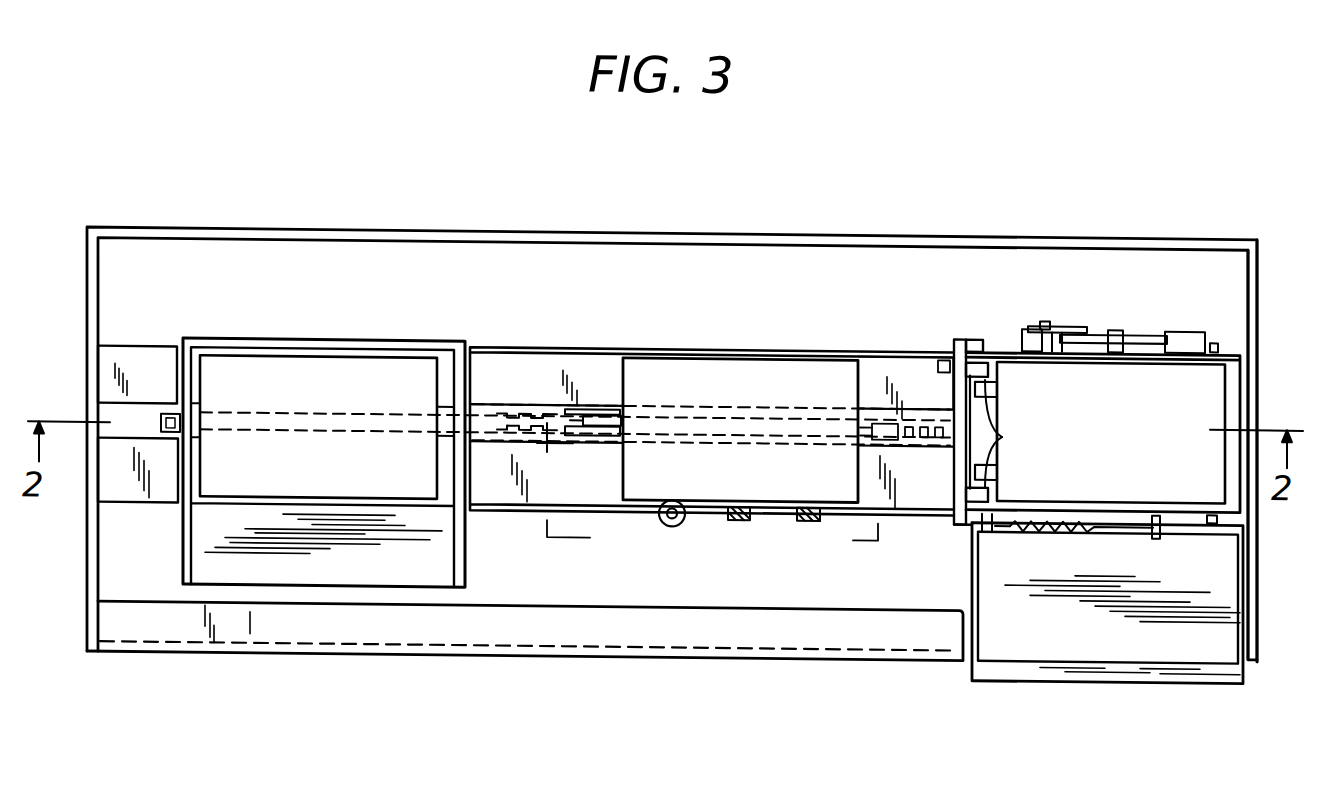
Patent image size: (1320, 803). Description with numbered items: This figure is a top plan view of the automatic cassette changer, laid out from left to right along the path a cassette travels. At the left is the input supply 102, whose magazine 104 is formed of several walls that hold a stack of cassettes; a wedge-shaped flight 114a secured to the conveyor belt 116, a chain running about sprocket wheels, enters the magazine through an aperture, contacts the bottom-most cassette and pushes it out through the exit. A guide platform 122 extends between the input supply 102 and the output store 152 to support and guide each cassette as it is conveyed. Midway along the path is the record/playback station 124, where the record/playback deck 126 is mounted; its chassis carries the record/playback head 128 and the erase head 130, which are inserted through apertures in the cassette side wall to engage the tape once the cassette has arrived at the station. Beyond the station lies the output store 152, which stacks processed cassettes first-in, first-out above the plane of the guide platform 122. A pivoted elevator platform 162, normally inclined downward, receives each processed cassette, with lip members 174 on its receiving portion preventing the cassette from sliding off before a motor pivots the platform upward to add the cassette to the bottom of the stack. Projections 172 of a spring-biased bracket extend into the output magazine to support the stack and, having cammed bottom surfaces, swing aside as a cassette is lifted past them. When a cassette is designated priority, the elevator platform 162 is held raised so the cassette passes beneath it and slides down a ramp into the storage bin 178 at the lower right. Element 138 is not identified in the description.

The input supply 102 is at (273, 318).
The magazine 104 is at (407, 338).
The flight 114a is at (605, 409).
The conveyor belt 116 is at (533, 412).
The guide platform 122 is at (903, 359).
The record/playback station 124 is at (802, 345).
The record/playback deck 126 is at (698, 363).
The record/playback head 128 is at (742, 514).
The erase head 130 is at (808, 512).
The roller 138 is at (663, 517).
The output store 152 is at (1308, 367).
The elevator platform 162 is at (1178, 478).
The projections 172 is at (1020, 434).
The lip members 174 is at (997, 378).
The storage bin 178 is at (1082, 621).